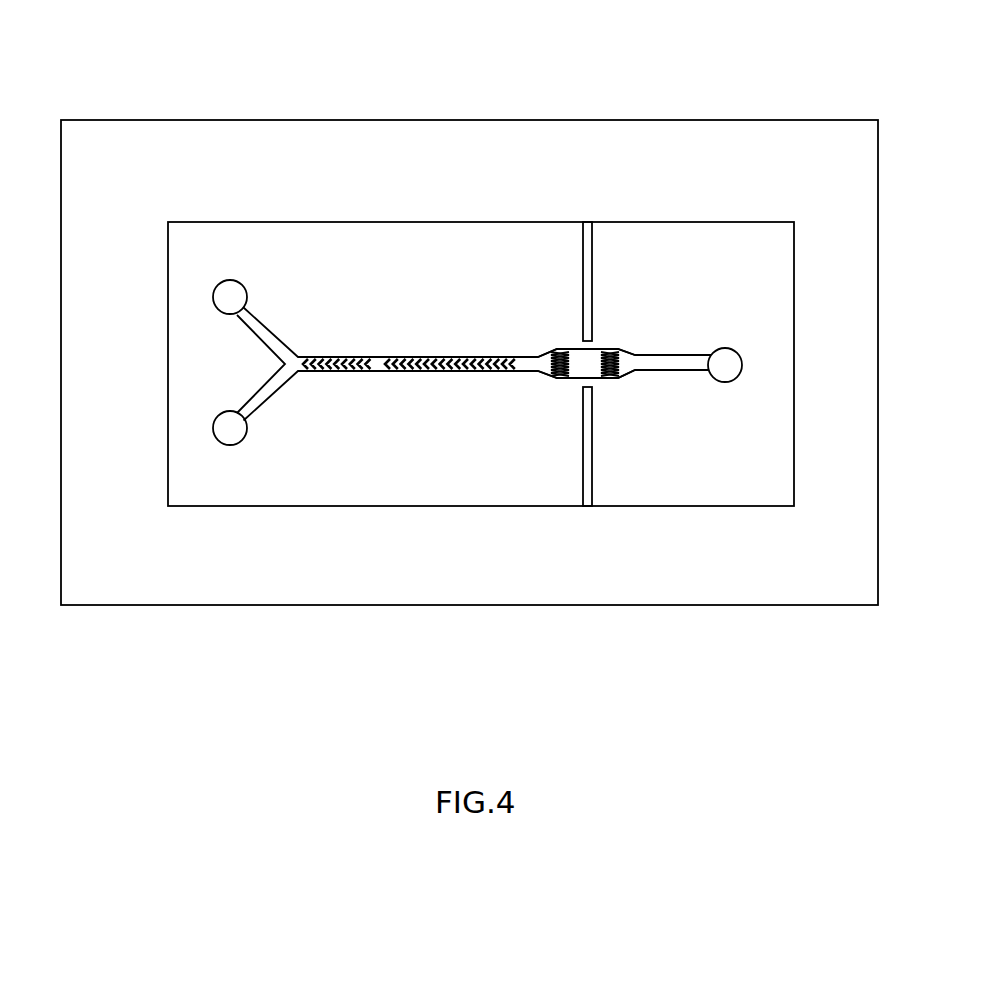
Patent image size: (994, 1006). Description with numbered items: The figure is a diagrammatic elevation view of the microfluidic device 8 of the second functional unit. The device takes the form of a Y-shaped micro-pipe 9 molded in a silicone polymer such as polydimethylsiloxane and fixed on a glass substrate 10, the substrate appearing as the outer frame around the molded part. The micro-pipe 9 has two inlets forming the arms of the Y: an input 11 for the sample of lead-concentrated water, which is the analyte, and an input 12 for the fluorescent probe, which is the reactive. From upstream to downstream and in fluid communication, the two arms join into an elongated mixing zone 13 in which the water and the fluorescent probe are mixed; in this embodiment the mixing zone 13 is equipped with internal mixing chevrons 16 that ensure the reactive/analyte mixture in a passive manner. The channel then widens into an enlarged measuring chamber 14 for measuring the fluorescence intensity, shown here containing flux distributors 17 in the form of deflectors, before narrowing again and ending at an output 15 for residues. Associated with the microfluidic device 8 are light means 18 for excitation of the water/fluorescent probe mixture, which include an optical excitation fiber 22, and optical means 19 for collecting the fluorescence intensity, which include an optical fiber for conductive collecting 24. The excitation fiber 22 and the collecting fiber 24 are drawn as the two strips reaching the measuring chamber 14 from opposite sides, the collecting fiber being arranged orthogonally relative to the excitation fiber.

The microfluidic device 8 is at (440, 114).
The glass substrate 10 is at (810, 152).
The micro-pipe 9 is at (513, 357).
The input 11 is at (218, 437).
The input 12 is at (227, 290).
The mixing zone 13 is at (407, 357).
The measuring chamber 14 is at (634, 350).
The output 15 is at (720, 373).
The mixing chevrons 16 is at (437, 372).
The flux distributors 17 is at (556, 381).
The light means 18 is at (611, 251).
The optical excitation fiber 22 is at (592, 285).
The optical means 19 is at (630, 484).
The optical fiber for conductive collecting 24 is at (592, 462).